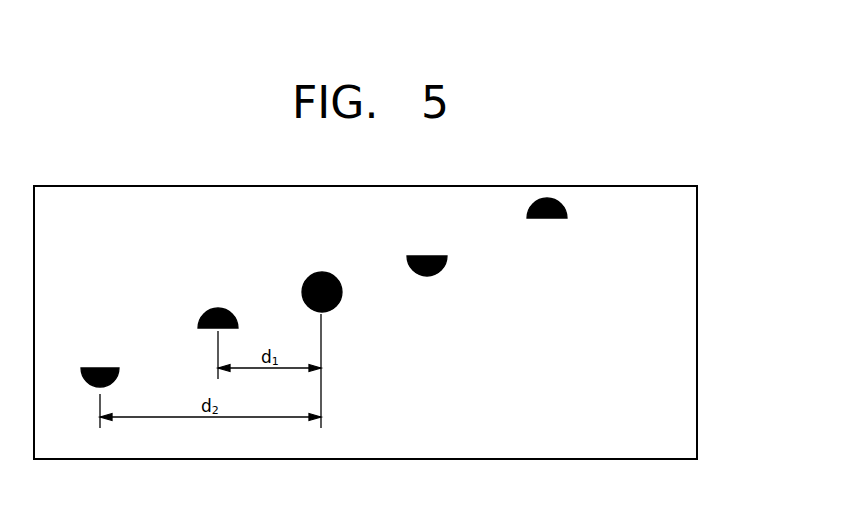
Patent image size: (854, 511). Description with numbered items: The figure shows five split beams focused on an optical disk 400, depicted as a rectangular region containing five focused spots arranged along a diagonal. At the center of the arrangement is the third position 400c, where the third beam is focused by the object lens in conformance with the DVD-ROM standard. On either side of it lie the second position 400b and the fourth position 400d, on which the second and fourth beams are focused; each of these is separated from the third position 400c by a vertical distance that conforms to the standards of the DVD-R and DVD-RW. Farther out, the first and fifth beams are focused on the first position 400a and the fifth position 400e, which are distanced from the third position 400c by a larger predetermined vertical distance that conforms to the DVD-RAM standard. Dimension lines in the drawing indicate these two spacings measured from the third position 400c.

The optical disk 400 is at (697, 325).
The first position 400a is at (546, 200).
The second position 400b is at (425, 255).
The third position 400c is at (320, 272).
The fourth position 400d is at (218, 308).
The fifth position 400e is at (96, 366).